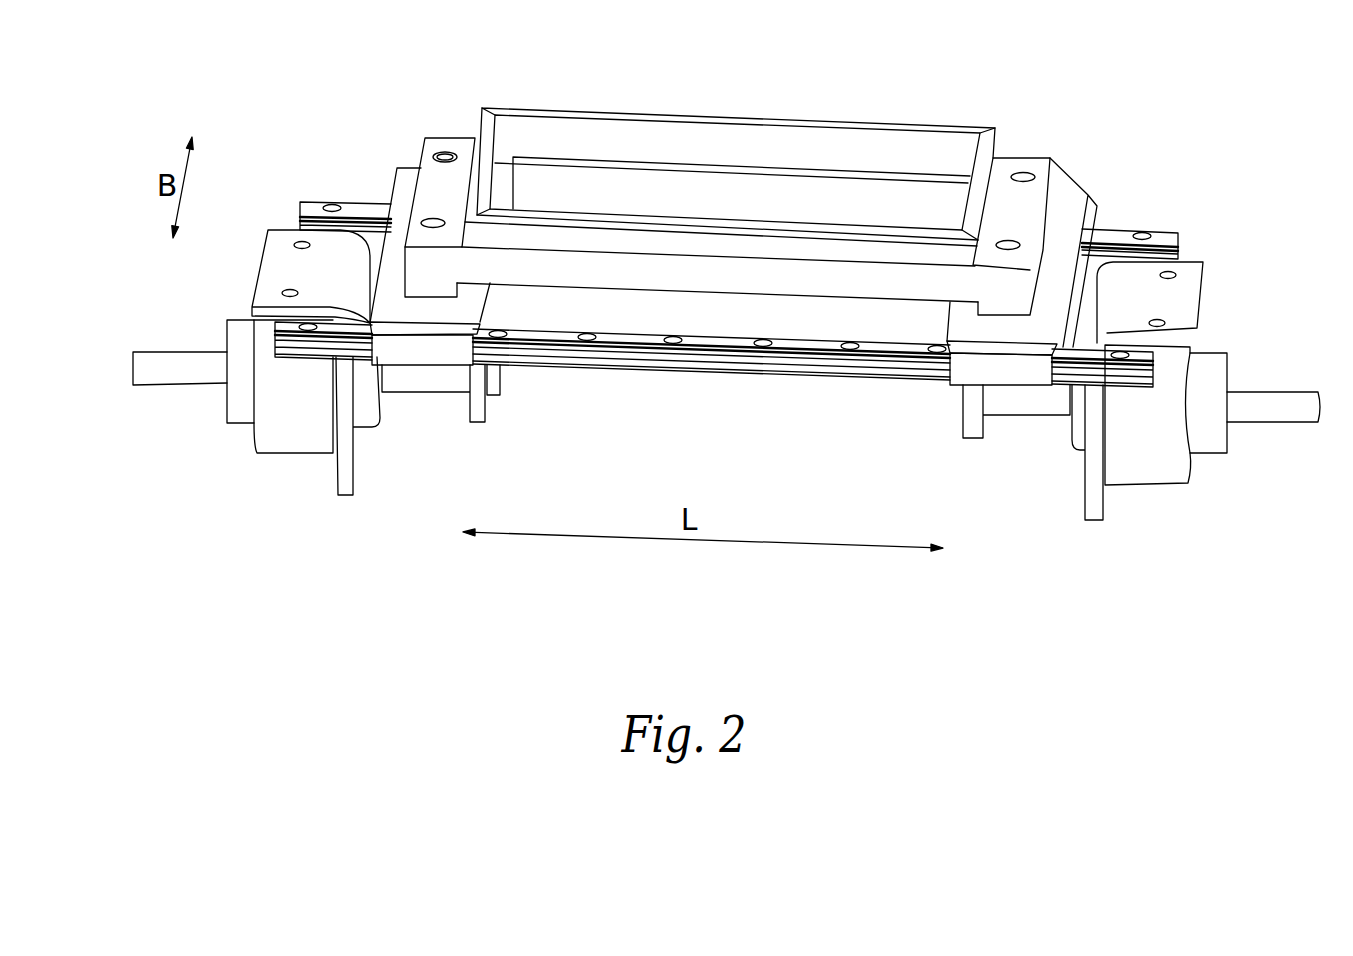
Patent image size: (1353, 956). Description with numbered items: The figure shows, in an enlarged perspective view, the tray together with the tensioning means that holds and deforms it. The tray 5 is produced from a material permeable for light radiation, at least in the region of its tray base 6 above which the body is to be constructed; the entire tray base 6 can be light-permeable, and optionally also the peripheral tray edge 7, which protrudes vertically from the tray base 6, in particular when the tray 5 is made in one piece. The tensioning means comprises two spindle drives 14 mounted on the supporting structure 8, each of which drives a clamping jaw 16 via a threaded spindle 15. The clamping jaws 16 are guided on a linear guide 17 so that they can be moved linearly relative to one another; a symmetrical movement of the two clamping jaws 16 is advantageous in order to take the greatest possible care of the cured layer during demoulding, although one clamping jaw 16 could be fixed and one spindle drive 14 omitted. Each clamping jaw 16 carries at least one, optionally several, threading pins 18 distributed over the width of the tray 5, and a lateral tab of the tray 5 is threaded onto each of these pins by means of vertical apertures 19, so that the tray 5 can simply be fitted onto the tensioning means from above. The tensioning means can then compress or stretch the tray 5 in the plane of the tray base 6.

The tray 5 is at (566, 100).
The tray base 6 is at (613, 192).
The peripheral tray edge 7 is at (812, 150).
The supporting structure 8 is at (283, 262).
The spindle drive 14 is at (290, 400).
The threaded spindle 15 is at (413, 377).
The clamping jaw 16 is at (407, 190).
The linear guide 17 is at (1108, 236).
The threading pin 18 is at (442, 150).
The vertical aperture 19 is at (459, 152).